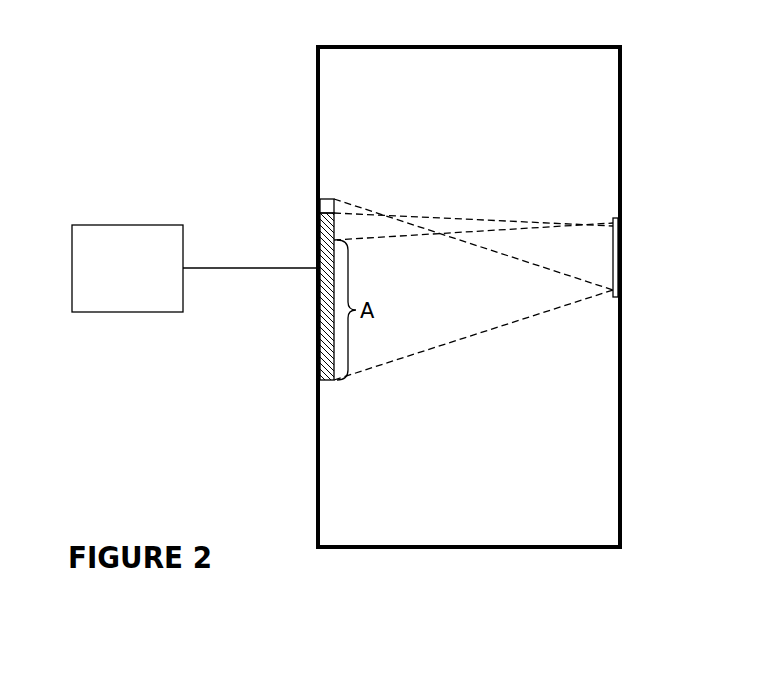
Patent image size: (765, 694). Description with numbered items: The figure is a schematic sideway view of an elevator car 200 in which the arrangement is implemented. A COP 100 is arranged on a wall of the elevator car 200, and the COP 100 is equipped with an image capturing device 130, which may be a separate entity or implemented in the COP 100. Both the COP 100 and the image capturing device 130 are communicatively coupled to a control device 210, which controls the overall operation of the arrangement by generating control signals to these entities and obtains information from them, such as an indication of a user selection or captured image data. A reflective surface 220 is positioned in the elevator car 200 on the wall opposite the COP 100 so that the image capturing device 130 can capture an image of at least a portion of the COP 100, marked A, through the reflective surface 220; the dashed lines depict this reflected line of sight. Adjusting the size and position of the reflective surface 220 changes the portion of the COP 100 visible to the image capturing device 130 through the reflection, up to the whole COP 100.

The elevator car 200 is at (316, 88).
The control device 210 is at (115, 225).
The COP 100 is at (318, 319).
The image capturing device 130 is at (318, 205).
The reflective surface 220 is at (618, 257).